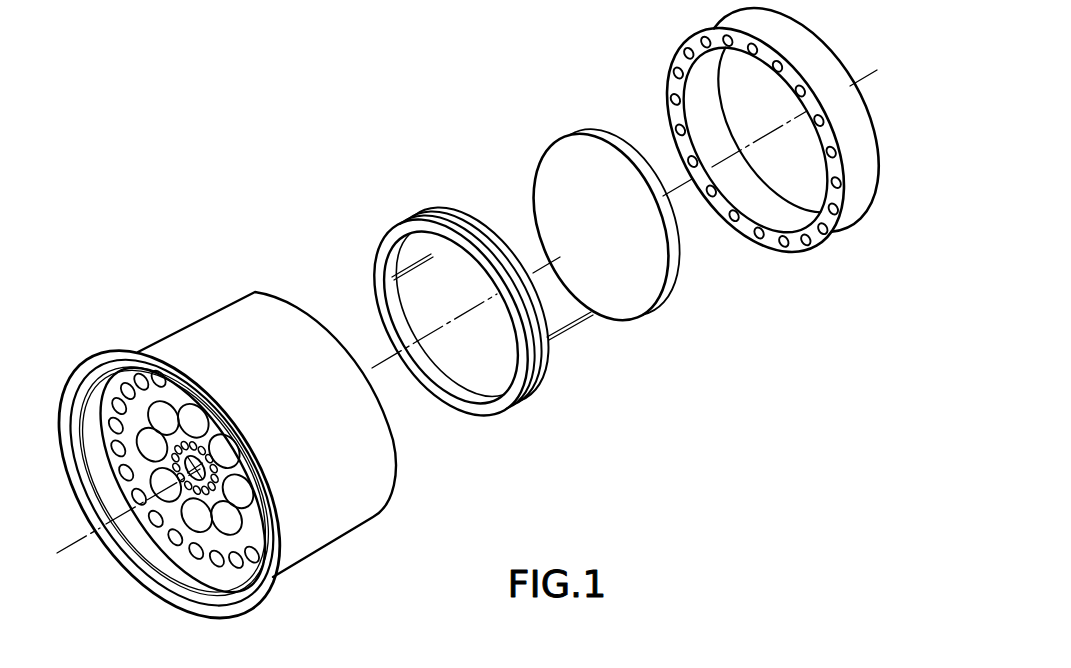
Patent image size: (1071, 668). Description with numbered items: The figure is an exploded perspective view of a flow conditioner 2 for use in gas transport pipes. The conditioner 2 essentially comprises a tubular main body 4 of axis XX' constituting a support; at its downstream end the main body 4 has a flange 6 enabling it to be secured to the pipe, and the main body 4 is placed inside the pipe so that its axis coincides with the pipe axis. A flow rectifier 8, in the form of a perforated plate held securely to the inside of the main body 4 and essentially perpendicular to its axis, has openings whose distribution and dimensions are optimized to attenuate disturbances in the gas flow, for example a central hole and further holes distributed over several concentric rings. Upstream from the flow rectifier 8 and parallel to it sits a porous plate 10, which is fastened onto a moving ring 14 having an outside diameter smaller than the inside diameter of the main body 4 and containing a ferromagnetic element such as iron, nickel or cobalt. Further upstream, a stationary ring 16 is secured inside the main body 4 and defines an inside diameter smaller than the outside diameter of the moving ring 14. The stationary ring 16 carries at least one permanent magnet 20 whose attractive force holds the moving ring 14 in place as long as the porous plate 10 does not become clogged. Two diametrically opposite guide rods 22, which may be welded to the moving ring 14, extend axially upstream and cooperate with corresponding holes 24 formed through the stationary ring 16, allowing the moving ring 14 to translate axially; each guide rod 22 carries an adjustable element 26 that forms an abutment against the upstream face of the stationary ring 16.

The flow conditioner 2 is at (356, 197).
The tubular main body 4 is at (221, 339).
The flange 6 is at (234, 607).
The flow rectifier 8 is at (158, 558).
The porous plate 10 is at (686, 302).
The ring 14 is at (531, 414).
The ring 16 is at (854, 238).
The permanent magnet 20 is at (686, 50).
The guide rod 22 is at (432, 256).
The hole 24 is at (674, 110).
The adjustable element 26 is at (726, 82).